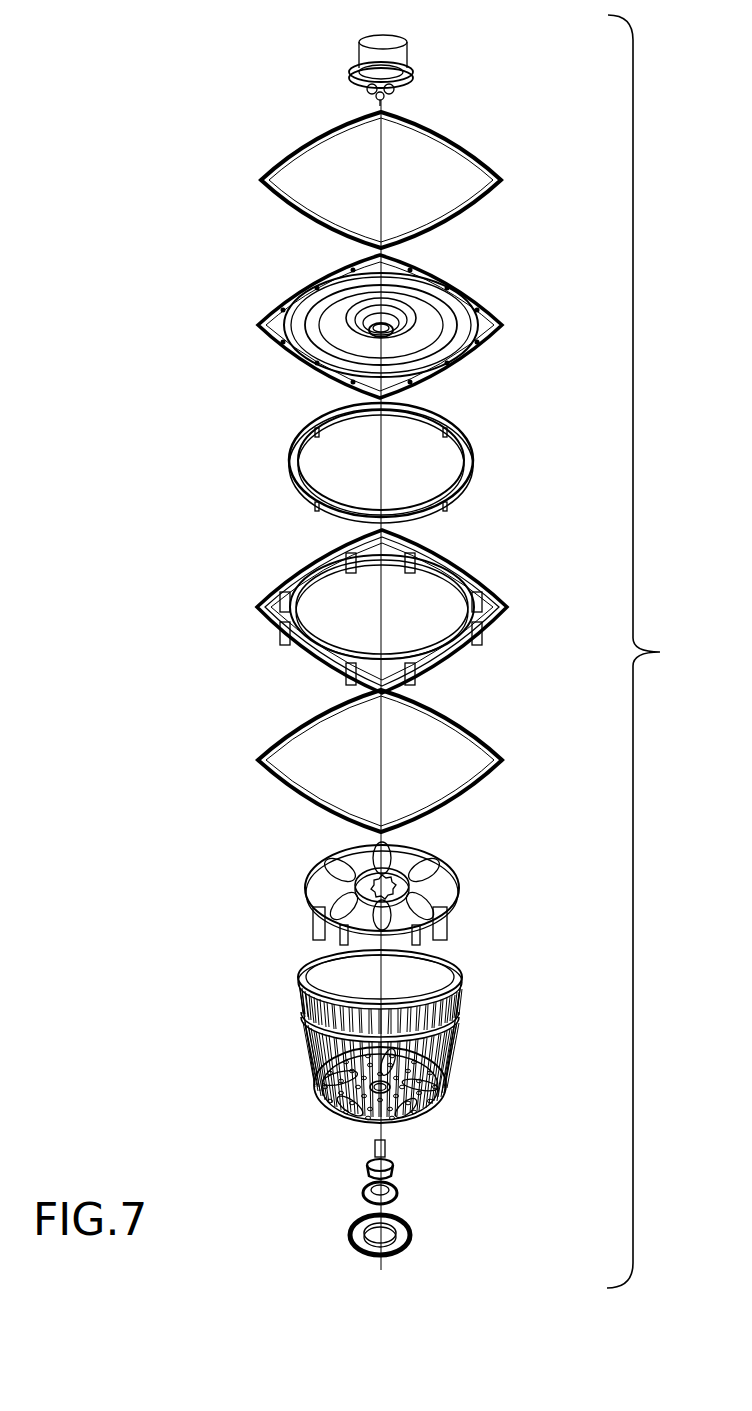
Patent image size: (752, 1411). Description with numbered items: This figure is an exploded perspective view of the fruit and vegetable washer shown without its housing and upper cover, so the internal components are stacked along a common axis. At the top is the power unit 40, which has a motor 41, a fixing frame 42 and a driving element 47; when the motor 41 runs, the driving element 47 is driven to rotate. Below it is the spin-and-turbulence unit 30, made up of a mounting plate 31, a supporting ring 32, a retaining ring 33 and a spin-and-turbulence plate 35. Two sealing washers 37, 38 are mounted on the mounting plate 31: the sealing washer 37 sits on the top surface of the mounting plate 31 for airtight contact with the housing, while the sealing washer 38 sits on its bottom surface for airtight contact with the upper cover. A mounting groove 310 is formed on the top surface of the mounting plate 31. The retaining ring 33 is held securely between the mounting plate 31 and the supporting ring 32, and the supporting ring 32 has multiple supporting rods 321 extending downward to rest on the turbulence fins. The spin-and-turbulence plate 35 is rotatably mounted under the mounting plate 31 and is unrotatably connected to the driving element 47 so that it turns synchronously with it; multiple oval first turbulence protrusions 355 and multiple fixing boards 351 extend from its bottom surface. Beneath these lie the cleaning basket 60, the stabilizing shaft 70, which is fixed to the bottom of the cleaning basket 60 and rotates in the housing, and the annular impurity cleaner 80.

The spin-and-turbulence unit 30 is at (207, 140).
The mounting plate 31 is at (402, 329).
The mounting groove 310 is at (370, 333).
The supporting ring 32 is at (397, 611).
The supporting rods 321 is at (283, 632).
The retaining ring 33 is at (472, 498).
The spin-and-turbulence plate 35 is at (398, 909).
The fixing boards 351 is at (322, 933).
The first turbulence protrusions 355 is at (420, 907).
The sealing washer 37 is at (490, 203).
The sealing washer 38 is at (483, 790).
The power unit 40 is at (414, 71).
The motor 41 is at (393, 45).
The fixing frame 42 is at (365, 68).
The driving element 47 is at (397, 94).
The cleaning basket 60 is at (478, 1047).
The stabilizing shaft 70 is at (398, 1153).
The annular impurity cleaner 80 is at (420, 1250).